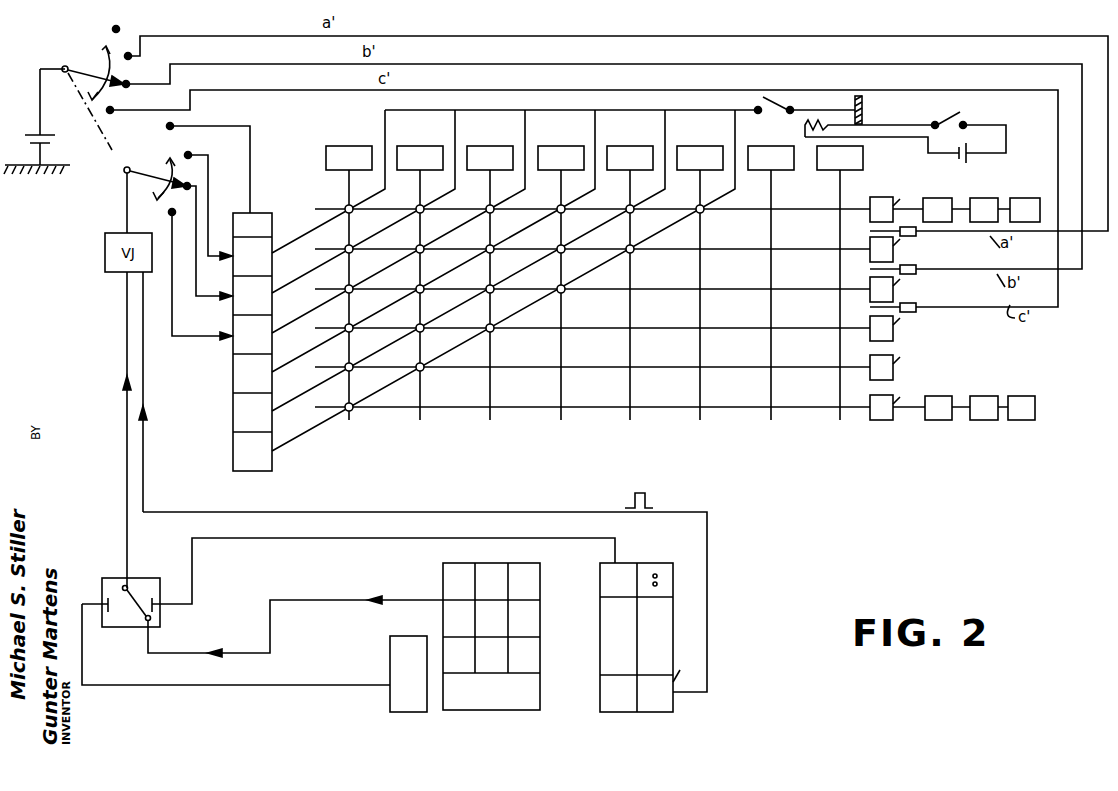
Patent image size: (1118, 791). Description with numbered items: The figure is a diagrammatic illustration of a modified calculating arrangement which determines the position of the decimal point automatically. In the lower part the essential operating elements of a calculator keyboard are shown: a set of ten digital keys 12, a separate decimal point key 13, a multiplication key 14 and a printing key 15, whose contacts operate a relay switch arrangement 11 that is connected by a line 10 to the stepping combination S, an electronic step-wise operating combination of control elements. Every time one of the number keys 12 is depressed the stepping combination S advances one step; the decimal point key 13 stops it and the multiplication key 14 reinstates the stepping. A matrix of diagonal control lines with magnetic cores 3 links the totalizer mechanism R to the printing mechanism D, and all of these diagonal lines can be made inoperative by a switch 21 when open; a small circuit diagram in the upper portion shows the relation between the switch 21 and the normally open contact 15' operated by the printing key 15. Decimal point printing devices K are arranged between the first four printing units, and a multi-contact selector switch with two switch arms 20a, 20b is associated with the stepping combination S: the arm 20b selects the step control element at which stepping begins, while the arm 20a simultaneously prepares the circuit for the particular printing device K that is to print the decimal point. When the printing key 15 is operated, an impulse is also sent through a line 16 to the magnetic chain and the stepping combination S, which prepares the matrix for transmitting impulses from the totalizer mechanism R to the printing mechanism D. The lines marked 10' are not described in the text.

The switch arm 20a is at (64, 110).
The switch arm 20b is at (139, 192).
The line 10 is at (209, 203).
The signal lines 10' is at (167, 394).
The magnetic cores 3 is at (351, 206).
The switch 21 is at (778, 113).
The contact 15' is at (905, 128).
The relay switch arrangement 11 is at (107, 578).
The digital keys 12 is at (540, 680).
The decimal point key 13 is at (390, 656).
The multiplication key 14 is at (600, 578).
The printing key 15 is at (686, 656).
The line 16 is at (500, 513).
The totalizer mechanism R is at (347, 136).
The stepping combination S is at (232, 390).
The printing mechanism D is at (977, 355).
The decimal point printing devices K is at (916, 268).